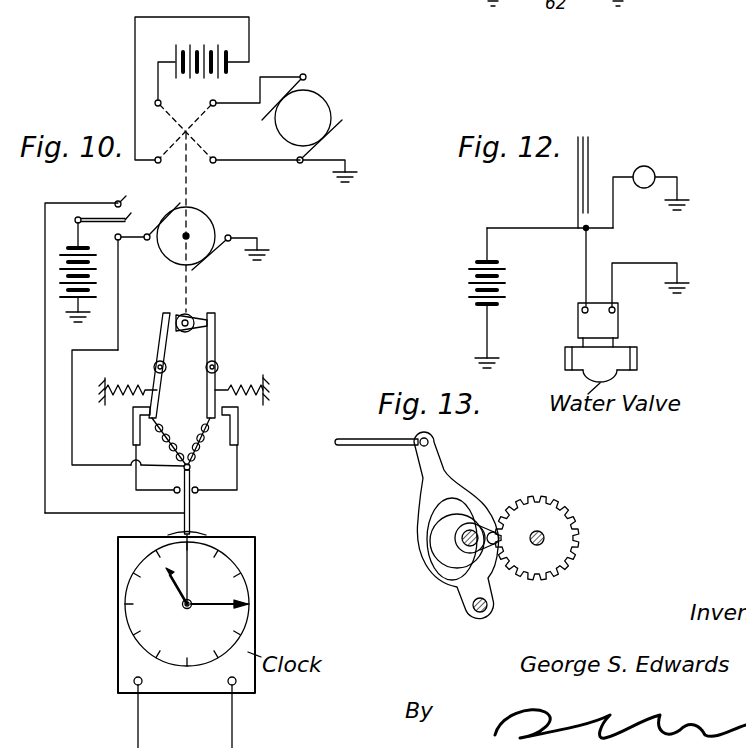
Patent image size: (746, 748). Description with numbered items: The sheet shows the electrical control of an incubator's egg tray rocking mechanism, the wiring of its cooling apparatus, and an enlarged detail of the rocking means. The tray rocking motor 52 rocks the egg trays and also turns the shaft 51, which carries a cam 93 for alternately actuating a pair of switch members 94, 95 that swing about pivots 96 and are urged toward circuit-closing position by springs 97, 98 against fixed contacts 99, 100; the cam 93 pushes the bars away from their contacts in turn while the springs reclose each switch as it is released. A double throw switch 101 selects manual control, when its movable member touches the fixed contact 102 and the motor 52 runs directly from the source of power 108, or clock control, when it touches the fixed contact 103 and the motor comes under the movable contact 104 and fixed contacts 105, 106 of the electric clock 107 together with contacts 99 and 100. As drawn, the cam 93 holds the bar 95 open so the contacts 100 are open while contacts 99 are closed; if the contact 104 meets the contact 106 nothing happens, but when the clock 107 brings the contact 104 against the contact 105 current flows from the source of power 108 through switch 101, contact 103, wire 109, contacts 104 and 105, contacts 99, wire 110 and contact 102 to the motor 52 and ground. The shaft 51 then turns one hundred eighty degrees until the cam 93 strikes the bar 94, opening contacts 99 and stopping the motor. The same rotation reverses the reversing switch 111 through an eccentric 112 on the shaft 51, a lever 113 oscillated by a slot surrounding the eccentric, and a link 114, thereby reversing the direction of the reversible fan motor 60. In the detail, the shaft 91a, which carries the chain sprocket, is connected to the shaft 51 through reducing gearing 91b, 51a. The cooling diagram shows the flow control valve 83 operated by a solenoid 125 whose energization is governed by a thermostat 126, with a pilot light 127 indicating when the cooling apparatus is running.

In FIG. 10, the reversing switch 111 is at (190, 136).
In FIG. 10, the reversible motor 60 is at (322, 104).
In FIG. 10, the fixed contact 103 is at (114, 192).
In FIG. 10, the double throw switch 101 is at (118, 211).
In FIG. 10, the fixed contact 102 is at (121, 242).
In FIG. 10, the tray rocking motor 52 is at (211, 229).
In FIG. 10, the source of power 108 is at (68, 277).
In FIG. 10, the wire 109 is at (45, 328).
In FIG. 10, the cam 93 is at (189, 317).
In FIG. 13, the cam 93 is at (494, 531).
In FIG. 10, the switch member 94 is at (162, 340).
In FIG. 10, the switch member 95 is at (216, 340).
In FIG. 10, the pivots 96 is at (206, 370).
In FIG. 10, the spring 97 is at (128, 385).
In FIG. 10, the spring 98 is at (242, 384).
In FIG. 10, the contact 99 is at (133, 428).
In FIG. 10, the contact 100 is at (239, 425).
In FIG. 10, the fixed contact 105 is at (176, 487).
In FIG. 10, the fixed contact 106 is at (201, 482).
In FIG. 10, the movable contact 104 is at (190, 505).
In FIG. 10, the wire 110 is at (114, 495).
In FIG. 10, the electric clock 107 is at (256, 608).
In FIG. 12, the thermostat 126 is at (586, 145).
In FIG. 12, the pilot light 127 is at (652, 162).
In FIG. 12, the solenoid 125 is at (578, 318).
In FIG. 12, the flow control valve 83 is at (627, 350).
In FIG. 13, the link 114 is at (338, 446).
In FIG. 13, the lever 113 is at (440, 472).
In FIG. 13, the eccentric 112 is at (437, 534).
In FIG. 13, the shaft 51 is at (461, 544).
In FIG. 13, the reducing gearing 51a is at (462, 580).
In FIG. 13, the reducing gearing 91b is at (562, 516).
In FIG. 13, the shaft 91a is at (545, 538).